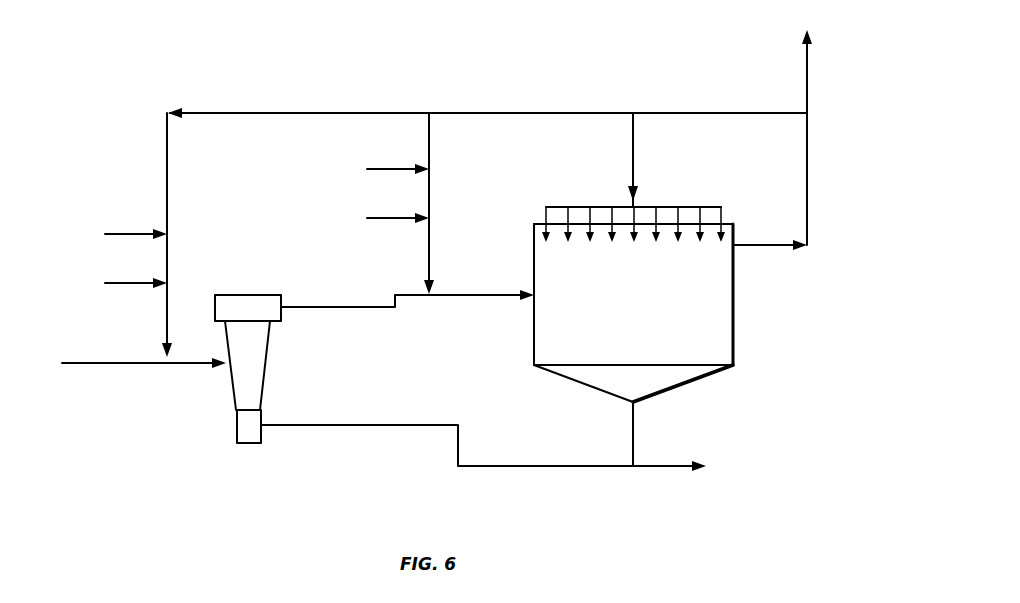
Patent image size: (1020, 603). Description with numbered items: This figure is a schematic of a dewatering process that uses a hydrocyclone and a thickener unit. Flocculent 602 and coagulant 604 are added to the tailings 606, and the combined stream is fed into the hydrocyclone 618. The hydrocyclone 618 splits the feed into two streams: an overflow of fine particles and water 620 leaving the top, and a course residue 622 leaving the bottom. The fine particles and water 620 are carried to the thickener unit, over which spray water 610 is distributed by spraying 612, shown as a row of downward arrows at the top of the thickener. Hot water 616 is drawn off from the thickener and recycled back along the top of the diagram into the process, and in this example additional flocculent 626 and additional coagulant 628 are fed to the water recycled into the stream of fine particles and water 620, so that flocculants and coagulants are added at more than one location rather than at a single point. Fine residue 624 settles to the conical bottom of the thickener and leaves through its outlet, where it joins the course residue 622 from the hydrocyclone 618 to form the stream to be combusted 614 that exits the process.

The flocculent 602 is at (116, 235).
The coagulant 604 is at (113, 284).
The tailings 606 is at (122, 364).
The spray water 610 is at (633, 158).
The spraying 612 is at (634, 226).
The stream to be combusted 614 is at (693, 467).
The hot water 616 is at (807, 182).
The hydrocyclone 618 is at (232, 393).
The fine particles and water 620 is at (309, 304).
The course residue 622 is at (344, 424).
The fine residue 624 is at (633, 440).
The additional flocculent 626 is at (377, 203).
The additional coagulant 628 is at (375, 219).